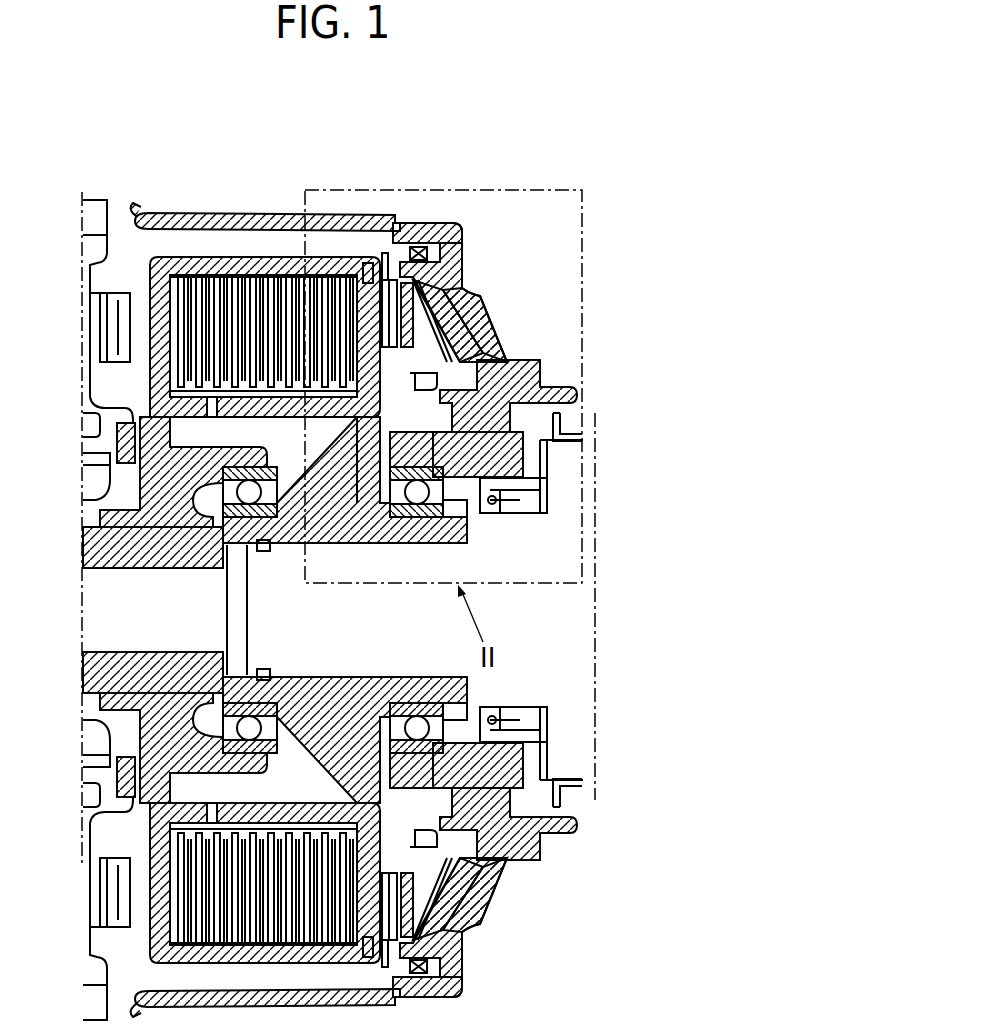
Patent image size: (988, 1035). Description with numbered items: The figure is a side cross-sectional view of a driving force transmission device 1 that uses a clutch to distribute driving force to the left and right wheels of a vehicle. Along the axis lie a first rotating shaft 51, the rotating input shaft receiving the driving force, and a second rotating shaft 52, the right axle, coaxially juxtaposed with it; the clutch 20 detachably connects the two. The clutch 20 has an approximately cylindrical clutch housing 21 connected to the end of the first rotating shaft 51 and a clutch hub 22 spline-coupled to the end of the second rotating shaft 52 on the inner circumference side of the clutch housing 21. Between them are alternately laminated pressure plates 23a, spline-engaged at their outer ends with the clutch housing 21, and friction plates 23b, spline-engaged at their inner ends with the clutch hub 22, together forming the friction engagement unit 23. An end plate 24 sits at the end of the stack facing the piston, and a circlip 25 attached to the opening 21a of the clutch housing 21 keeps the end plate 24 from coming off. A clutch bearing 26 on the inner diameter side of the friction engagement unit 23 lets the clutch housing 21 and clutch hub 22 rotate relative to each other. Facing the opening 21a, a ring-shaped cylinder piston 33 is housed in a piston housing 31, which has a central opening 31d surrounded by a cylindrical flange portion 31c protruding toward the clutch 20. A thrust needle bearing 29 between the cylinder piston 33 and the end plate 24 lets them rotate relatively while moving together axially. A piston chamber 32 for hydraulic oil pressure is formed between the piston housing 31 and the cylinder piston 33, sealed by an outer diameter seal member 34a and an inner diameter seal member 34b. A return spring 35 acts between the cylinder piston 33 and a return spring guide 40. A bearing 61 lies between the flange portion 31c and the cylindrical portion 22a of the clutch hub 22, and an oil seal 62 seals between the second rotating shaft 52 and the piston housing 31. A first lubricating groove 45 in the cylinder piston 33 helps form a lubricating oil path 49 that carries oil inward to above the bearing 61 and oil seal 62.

The driving force transmission device 1 is at (442, 170).
The clutch 20 is at (305, 258).
The clutch housing 21 is at (282, 256).
The opening 21a is at (394, 220).
The clutch hub 22 is at (348, 455).
The cylindrical portion 22a is at (385, 535).
The friction engagement unit 23 is at (262, 232).
The pressure plate 23a is at (198, 268).
The friction plate 23b is at (185, 277).
The end plate 24 is at (369, 262).
The circlip 25 is at (385, 253).
The clutch bearing 26 is at (272, 552).
The thrust needle bearing 29 is at (420, 247).
The piston housing 31 is at (466, 270).
The flange portion 31c is at (398, 530).
The opening 31d is at (526, 483).
The piston chamber 32 is at (460, 307).
The cylinder piston 33 is at (457, 325).
The outer diameter seal member 34a is at (437, 222).
The inner diameter seal member 34b is at (478, 445).
The return spring 35 is at (433, 403).
The return spring guide 40 is at (400, 386).
The first lubricating groove 45 is at (440, 340).
The lubricating oil path 49 is at (500, 362).
The first rotating shaft 51 is at (93, 553).
The second rotating shaft 52 is at (573, 628).
The bearing 61 is at (446, 505).
The oil seal 62 is at (549, 490).